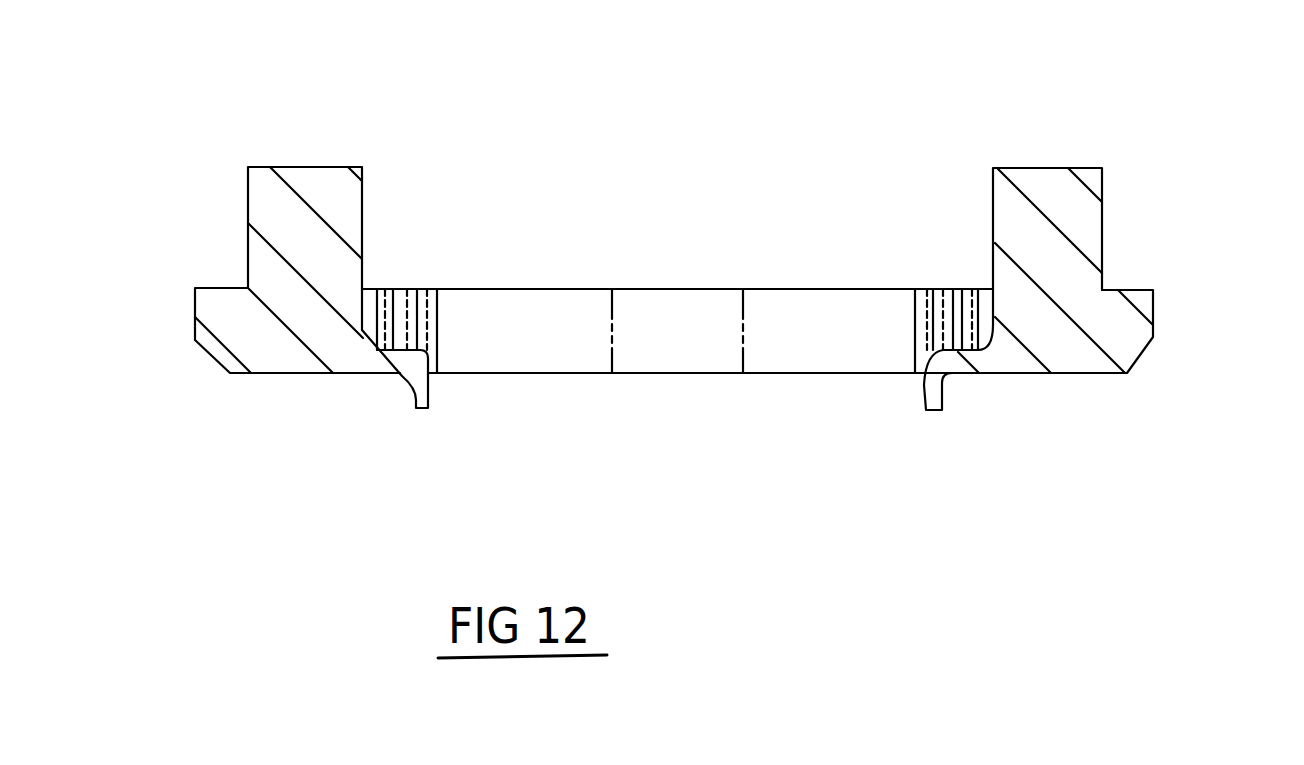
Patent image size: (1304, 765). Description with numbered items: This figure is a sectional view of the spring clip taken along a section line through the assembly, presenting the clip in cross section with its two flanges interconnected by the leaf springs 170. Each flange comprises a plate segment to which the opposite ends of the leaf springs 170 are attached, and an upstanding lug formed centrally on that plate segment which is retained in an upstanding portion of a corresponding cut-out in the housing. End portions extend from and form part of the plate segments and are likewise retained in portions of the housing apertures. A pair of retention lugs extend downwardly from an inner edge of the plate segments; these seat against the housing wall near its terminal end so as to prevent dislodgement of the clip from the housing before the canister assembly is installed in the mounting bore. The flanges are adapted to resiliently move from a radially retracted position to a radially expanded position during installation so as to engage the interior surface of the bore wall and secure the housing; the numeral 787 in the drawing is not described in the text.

The cross-sectional assembly 787 is at (848, 125).
The leaf spring 170 is at (512, 303).